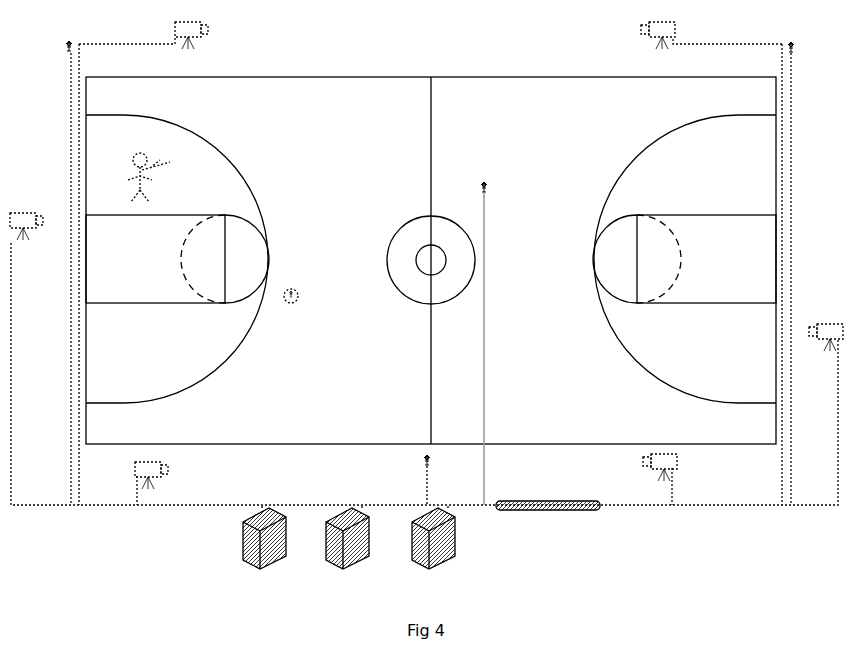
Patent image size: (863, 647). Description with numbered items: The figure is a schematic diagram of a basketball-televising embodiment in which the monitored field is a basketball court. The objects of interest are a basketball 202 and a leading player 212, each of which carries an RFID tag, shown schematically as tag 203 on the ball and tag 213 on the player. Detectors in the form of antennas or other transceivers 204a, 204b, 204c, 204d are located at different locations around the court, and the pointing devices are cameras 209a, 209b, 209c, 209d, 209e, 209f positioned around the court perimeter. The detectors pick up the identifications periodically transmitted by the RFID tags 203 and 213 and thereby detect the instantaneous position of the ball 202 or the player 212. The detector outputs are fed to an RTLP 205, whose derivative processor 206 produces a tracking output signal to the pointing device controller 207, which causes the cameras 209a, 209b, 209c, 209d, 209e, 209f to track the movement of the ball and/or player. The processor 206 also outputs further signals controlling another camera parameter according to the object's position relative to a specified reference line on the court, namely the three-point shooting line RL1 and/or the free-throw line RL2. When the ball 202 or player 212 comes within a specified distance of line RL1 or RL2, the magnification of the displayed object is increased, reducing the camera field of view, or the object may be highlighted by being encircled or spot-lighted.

The basketball 202 is at (296, 306).
The RFID tag 203 is at (306, 279).
The detector 204a is at (49, 50).
The detector 204b is at (405, 475).
The detector 204c is at (504, 189).
The detector 204d is at (816, 59).
The RTLP 205 is at (264, 547).
The derivative processor 206 is at (347, 547).
The pointing device controller 207 is at (433, 547).
The camera 209a is at (130, 479).
The camera 209b is at (649, 479).
The camera 209c is at (825, 327).
The camera 209d is at (31, 216).
The camera 209e is at (194, 45).
The camera 209f is at (657, 45).
The leading player 212 is at (139, 167).
The RFID tag 213 is at (173, 155).
The three-point reference line RL1 is at (431, 260).
The free-throw line RL2 is at (431, 259).